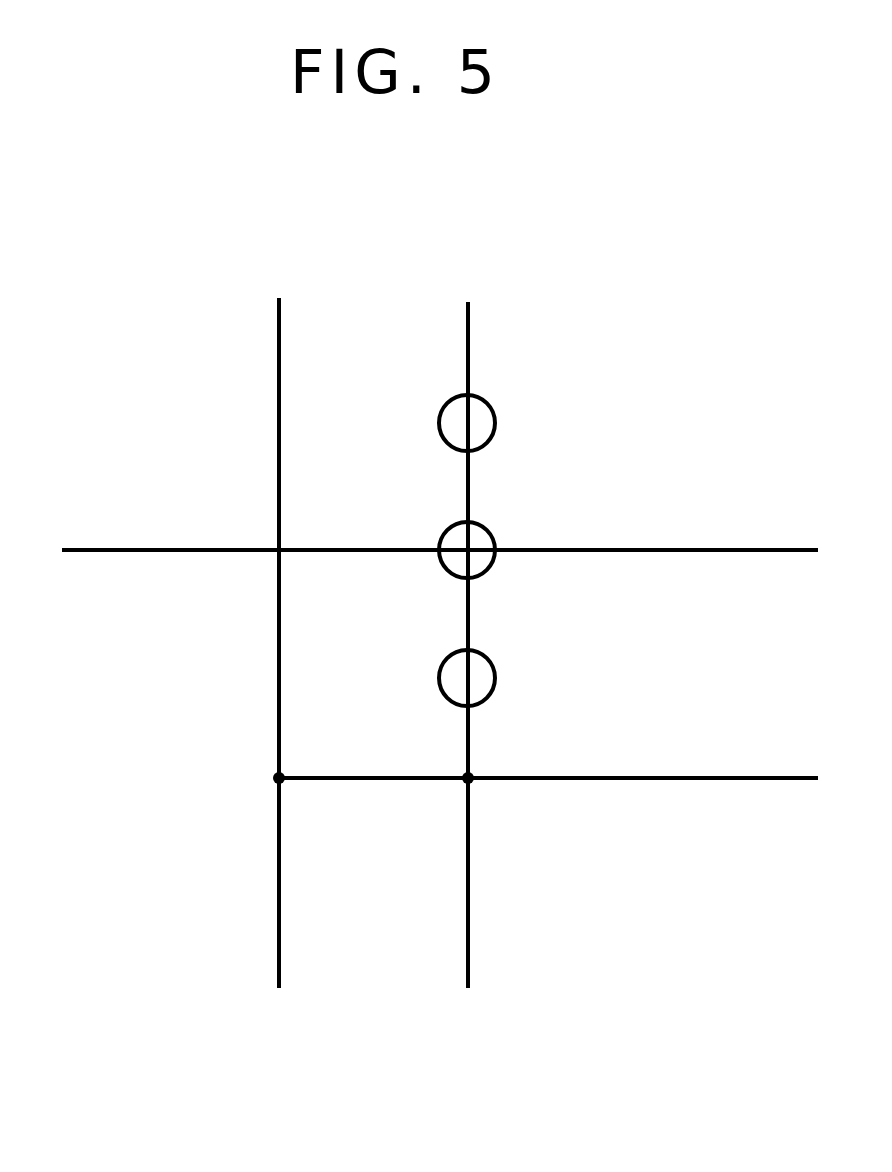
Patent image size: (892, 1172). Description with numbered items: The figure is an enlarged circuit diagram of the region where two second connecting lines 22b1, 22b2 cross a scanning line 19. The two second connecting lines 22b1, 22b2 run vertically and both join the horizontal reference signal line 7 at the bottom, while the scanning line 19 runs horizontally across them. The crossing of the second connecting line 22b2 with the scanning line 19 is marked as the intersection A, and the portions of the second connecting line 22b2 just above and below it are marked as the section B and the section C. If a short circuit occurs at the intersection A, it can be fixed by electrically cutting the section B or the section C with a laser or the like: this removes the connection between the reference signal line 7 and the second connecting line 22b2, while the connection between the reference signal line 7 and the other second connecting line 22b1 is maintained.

The second connecting line 22b1 is at (279, 332).
The second connecting line 22b2 is at (468, 322).
The scanning line 19 is at (133, 548).
The reference signal line 7 is at (708, 780).
The intersection A is at (490, 537).
The section B is at (495, 423).
The section C is at (495, 672).